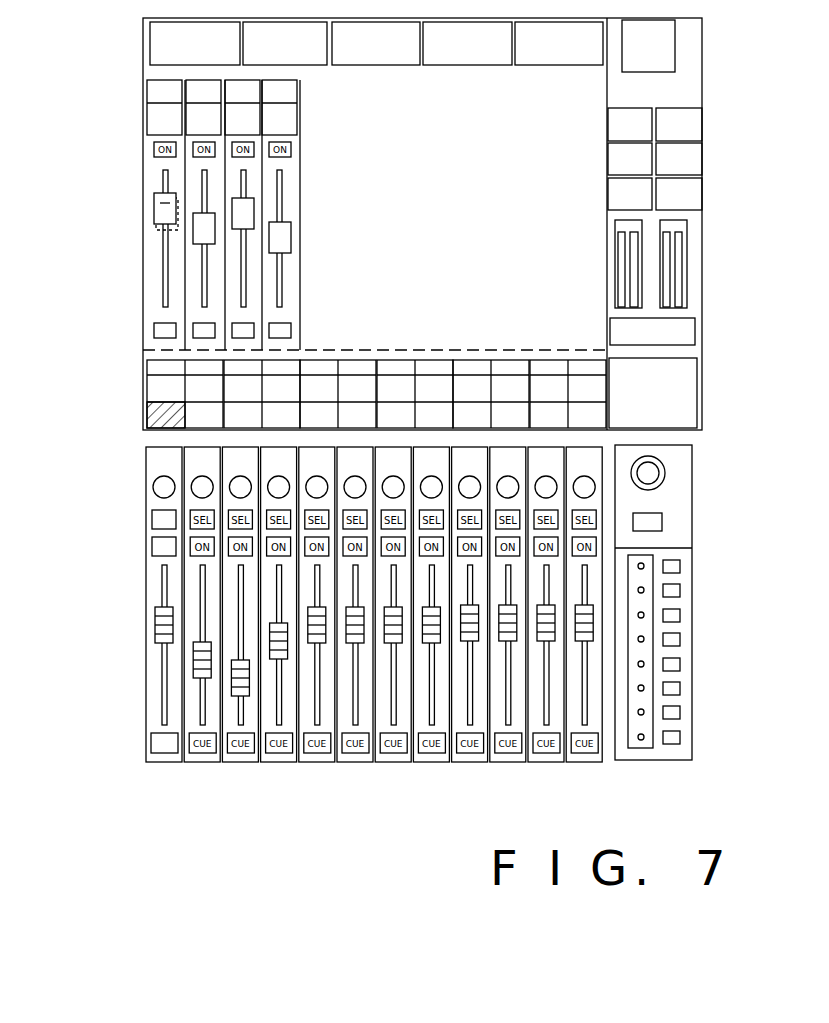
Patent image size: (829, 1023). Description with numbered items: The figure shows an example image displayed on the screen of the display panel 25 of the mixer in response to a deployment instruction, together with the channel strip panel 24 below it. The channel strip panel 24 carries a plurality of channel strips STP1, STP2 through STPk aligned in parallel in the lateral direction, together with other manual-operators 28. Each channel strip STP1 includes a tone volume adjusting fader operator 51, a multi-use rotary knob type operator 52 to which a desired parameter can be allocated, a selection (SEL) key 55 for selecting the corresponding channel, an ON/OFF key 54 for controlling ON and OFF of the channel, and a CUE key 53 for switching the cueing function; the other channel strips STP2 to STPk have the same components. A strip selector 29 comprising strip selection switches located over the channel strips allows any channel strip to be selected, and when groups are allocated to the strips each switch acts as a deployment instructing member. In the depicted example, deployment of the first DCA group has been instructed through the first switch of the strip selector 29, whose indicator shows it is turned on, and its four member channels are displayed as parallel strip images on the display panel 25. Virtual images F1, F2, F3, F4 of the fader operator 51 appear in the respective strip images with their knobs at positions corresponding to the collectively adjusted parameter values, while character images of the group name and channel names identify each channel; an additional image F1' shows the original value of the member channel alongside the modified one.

The display panel 25 is at (377, 224).
The channel strip panel 24 is at (371, 622).
The strip selector 29 is at (143, 392).
The other manual-operators 28 is at (658, 763).
The multi-use rotary knob type operator 52 is at (153, 487).
The selection (SEL) key 55 is at (152, 518).
The ON/OFF key 54 is at (152, 550).
The tone volume adjusting fader operator 51 is at (155, 622).
The CUE key 53 is at (150, 745).
The virtual image of the fader operator F1 is at (136, 202).
The original value display of the fader operator F1' is at (115, 214).
The virtual image of the fader operator F2 is at (200, 233).
The virtual image of the fader operator F3 is at (240, 223).
The virtual image of the fader operator F4 is at (280, 238).
The channel strip STP1 is at (157, 763).
The channel strip STP2 is at (197, 763).
The channel strip STPk is at (585, 763).